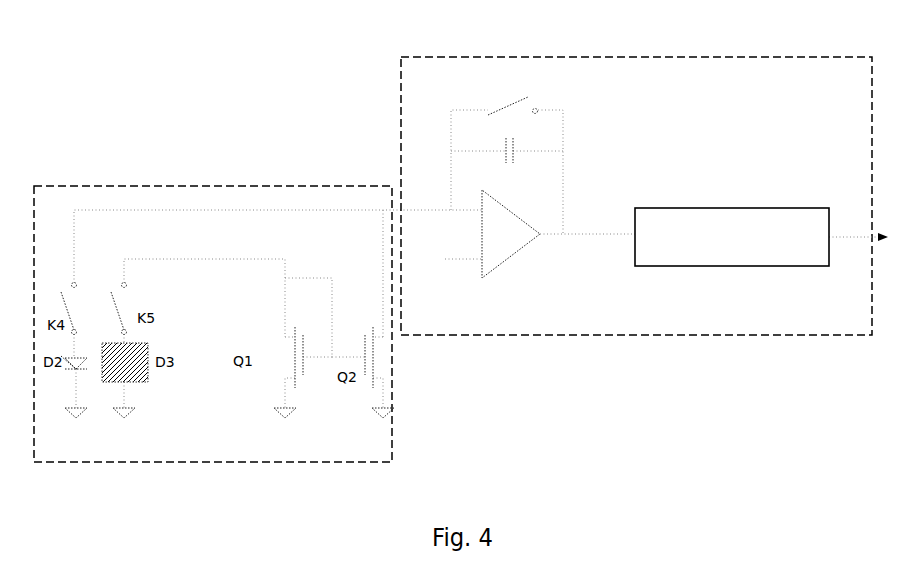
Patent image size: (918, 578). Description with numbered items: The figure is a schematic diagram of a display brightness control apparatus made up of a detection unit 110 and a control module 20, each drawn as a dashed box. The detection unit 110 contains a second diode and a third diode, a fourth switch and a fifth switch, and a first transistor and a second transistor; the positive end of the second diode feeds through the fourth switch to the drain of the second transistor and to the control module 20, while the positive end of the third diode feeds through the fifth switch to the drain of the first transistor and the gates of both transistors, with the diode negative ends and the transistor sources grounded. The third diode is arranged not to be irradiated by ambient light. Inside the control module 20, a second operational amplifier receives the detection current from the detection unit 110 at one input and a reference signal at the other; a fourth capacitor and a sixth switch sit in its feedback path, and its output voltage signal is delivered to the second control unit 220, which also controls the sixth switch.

The control module 20 is at (633, 56).
The detection unit 110 is at (196, 186).
The second control unit 220 is at (706, 207).